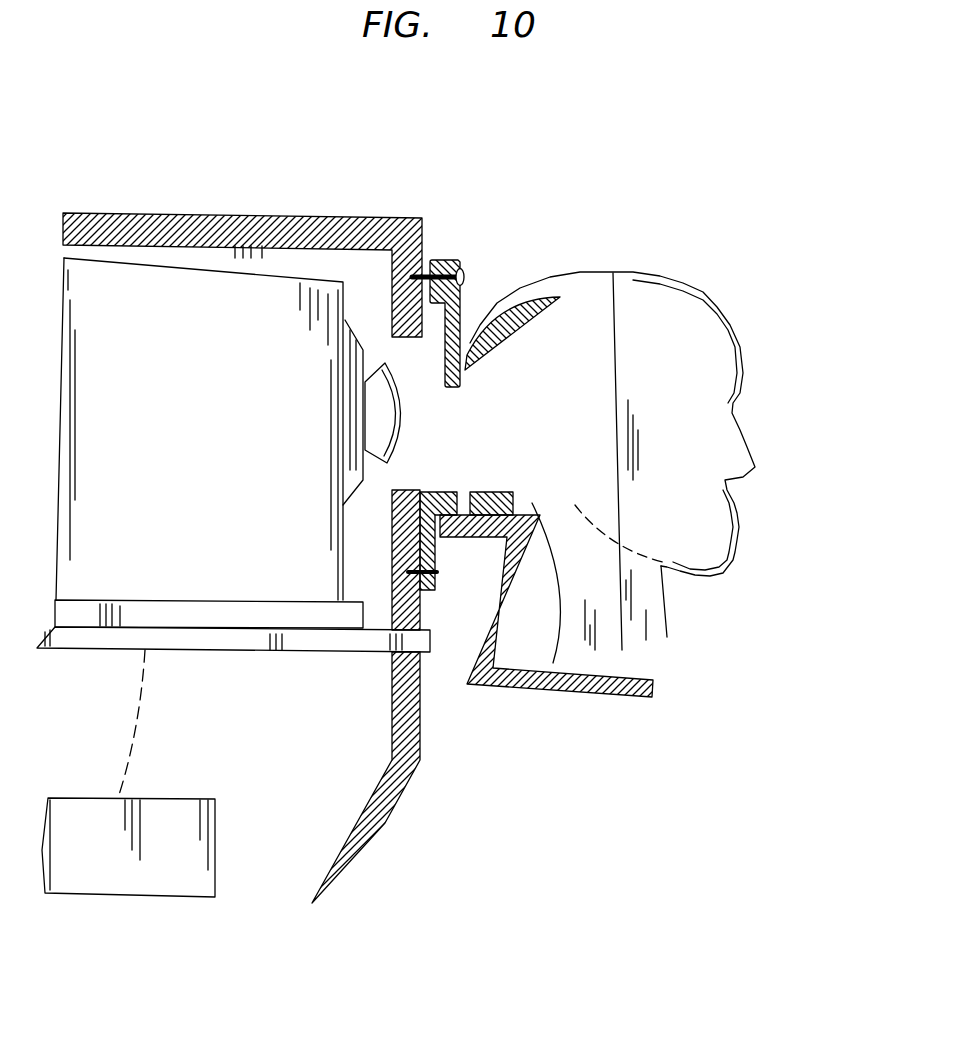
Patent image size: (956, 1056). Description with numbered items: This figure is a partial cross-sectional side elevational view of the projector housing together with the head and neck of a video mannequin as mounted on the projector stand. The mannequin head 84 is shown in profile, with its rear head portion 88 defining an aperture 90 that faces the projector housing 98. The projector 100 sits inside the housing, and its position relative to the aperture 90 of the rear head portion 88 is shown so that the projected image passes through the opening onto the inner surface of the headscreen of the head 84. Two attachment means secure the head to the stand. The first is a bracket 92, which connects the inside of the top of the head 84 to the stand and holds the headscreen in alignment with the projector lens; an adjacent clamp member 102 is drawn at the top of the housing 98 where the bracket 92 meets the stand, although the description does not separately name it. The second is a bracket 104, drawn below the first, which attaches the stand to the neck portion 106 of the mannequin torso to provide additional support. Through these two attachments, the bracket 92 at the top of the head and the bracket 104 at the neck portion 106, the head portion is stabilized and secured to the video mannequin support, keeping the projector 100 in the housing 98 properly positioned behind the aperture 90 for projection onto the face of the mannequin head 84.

The mannequin head 84 is at (768, 327).
The rear head portion 88 is at (593, 343).
The aperture 90 is at (457, 417).
The bracket 92 is at (558, 300).
The projector housing 98 is at (112, 212).
The projector 100 is at (297, 308).
The upper mounting bracket 102 is at (453, 267).
The bracket 104 is at (653, 688).
The neck portion 106 is at (653, 637).